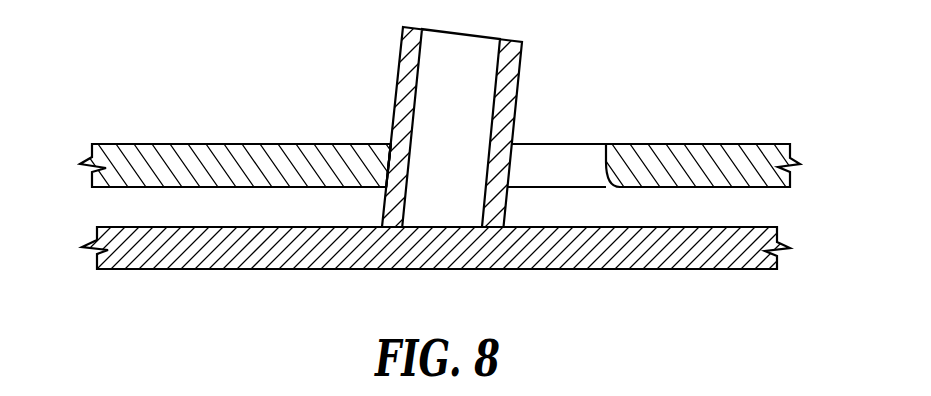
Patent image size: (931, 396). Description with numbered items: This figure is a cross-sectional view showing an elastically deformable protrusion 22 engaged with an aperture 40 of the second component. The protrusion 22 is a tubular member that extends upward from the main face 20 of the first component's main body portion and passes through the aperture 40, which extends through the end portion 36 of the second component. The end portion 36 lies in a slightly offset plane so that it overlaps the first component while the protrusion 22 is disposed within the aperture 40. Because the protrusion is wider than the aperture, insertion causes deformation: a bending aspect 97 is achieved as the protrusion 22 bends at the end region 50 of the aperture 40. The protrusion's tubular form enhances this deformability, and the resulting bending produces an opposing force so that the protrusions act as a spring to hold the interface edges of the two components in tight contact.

The main face 20 is at (176, 227).
The end portion 36 is at (205, 144).
The aperture 40 is at (577, 148).
The elastically deformable protrusion 22 is at (506, 76).
The bending aspect 97 is at (386, 142).
The end region 50 is at (389, 166).